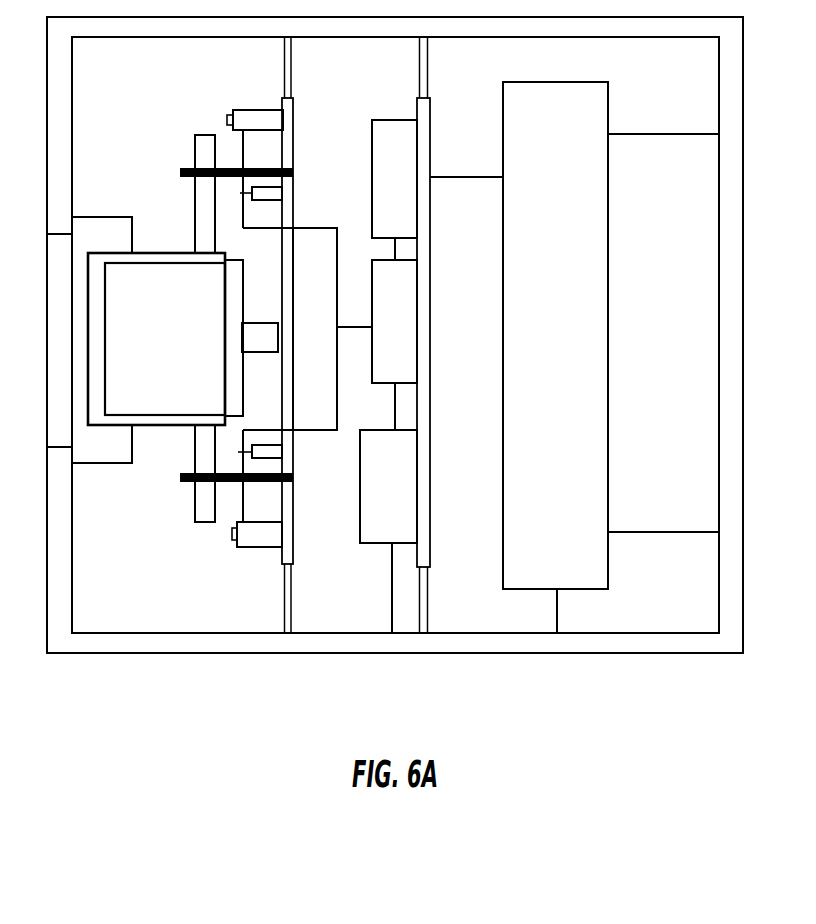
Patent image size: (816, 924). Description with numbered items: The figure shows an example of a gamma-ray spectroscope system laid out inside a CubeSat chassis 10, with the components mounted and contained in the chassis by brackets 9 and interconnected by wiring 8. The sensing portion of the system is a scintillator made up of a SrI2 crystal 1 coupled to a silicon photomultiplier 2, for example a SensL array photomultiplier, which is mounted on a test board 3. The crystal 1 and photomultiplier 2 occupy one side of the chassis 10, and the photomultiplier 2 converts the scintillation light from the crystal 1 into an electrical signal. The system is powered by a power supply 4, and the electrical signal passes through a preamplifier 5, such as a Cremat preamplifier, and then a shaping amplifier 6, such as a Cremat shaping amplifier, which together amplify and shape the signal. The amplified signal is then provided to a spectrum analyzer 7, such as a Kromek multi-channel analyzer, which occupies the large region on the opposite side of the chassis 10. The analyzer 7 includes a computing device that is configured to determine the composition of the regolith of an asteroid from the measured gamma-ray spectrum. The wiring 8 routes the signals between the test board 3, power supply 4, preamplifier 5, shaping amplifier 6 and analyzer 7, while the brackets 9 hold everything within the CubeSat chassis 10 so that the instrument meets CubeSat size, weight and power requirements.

The SrI2 crystal 1 is at (173, 352).
The silicon photomultiplier 2 is at (242, 328).
The test board 3 is at (260, 319).
The power supply 4 is at (399, 500).
The preamplifier 5 is at (404, 330).
The shaping amplifier 6 is at (405, 192).
The spectrum analyzer 7 is at (564, 347).
The wiring 8 is at (315, 329).
The brackets 9 is at (663, 314).
The CubeSat chassis 10 is at (395, 335).